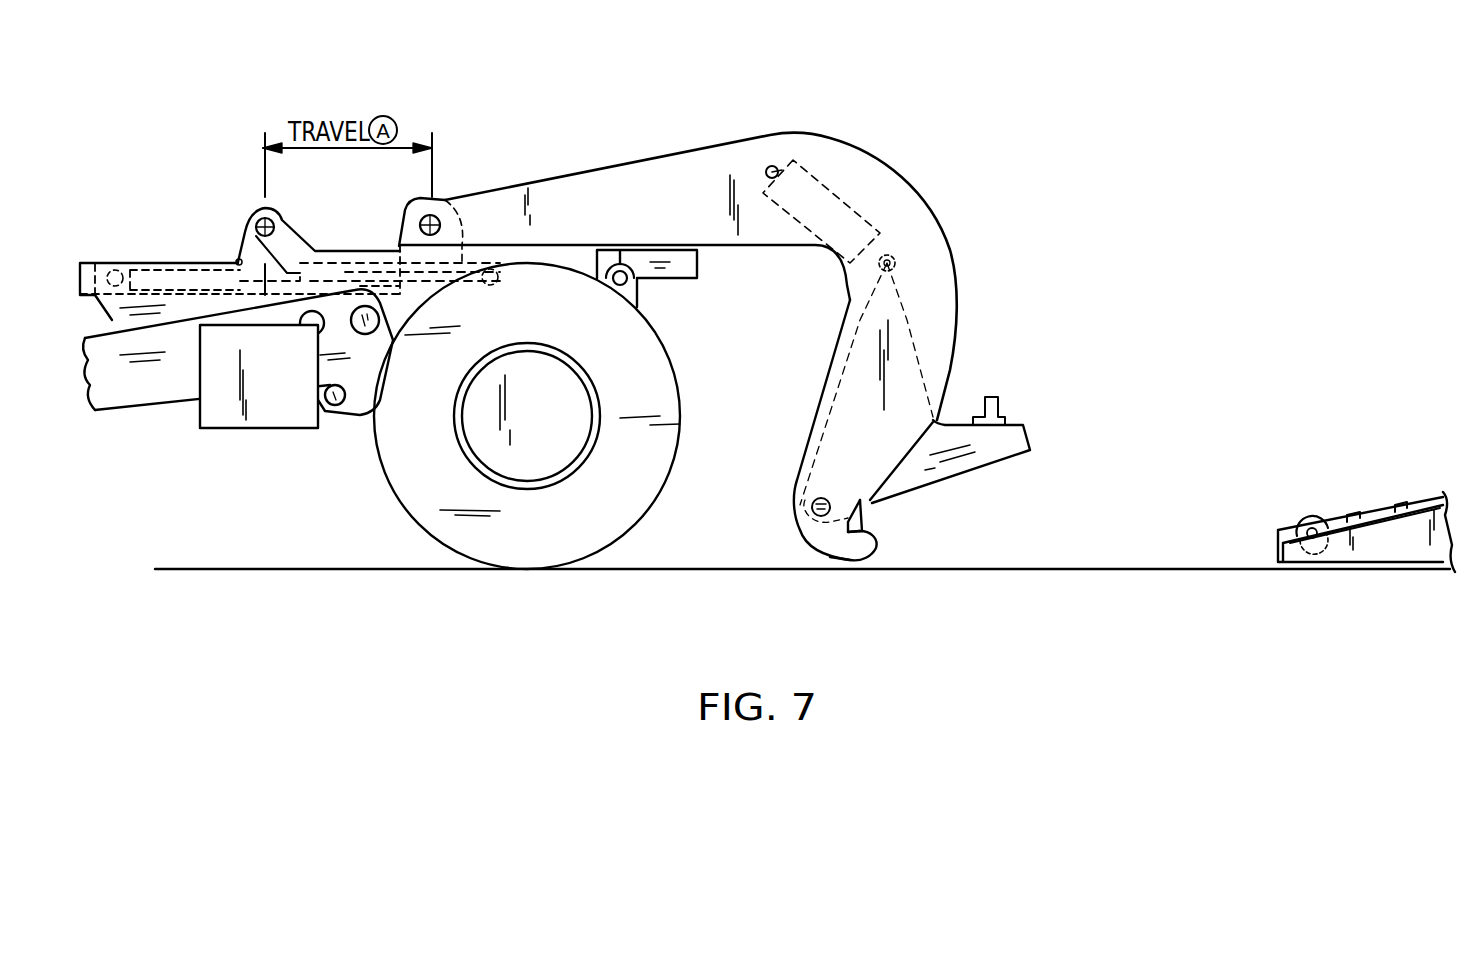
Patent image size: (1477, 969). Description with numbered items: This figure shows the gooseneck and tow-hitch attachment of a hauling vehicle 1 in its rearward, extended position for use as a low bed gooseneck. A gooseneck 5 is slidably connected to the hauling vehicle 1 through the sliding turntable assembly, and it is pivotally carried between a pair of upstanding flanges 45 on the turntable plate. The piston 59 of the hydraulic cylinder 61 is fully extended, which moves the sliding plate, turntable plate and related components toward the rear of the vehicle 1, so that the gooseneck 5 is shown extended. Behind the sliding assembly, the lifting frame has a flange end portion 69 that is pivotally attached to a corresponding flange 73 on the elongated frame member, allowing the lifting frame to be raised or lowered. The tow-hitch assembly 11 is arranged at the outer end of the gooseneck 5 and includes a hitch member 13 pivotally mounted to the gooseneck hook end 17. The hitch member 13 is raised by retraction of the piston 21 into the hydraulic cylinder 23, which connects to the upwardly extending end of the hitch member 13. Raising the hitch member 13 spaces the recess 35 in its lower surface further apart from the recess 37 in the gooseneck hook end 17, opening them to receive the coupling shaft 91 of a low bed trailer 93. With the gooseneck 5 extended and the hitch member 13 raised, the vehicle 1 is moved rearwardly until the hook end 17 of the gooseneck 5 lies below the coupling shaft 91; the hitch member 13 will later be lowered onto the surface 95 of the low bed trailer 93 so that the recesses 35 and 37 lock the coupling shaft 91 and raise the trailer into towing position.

The hauling vehicle 1 is at (345, 489).
The gooseneck 5 is at (617, 163).
The tow-hitch assembly 11 is at (972, 308).
The hitch member 13 is at (952, 423).
The gooseneck hook end 17 is at (860, 553).
The piston end 21 is at (892, 257).
The hydraulic cylinder 23 is at (818, 178).
The recess 35 is at (880, 512).
The recess 37 is at (873, 531).
The flange 45 is at (436, 200).
The piston 59 is at (347, 275).
The hydraulic cylinder 61 is at (152, 262).
The flange end portion 69 is at (294, 232).
The flange 73 is at (239, 261).
The coupling shaft 91 is at (1303, 522).
The low bed trailer 93 is at (1375, 440).
The surface 95 is at (1373, 516).